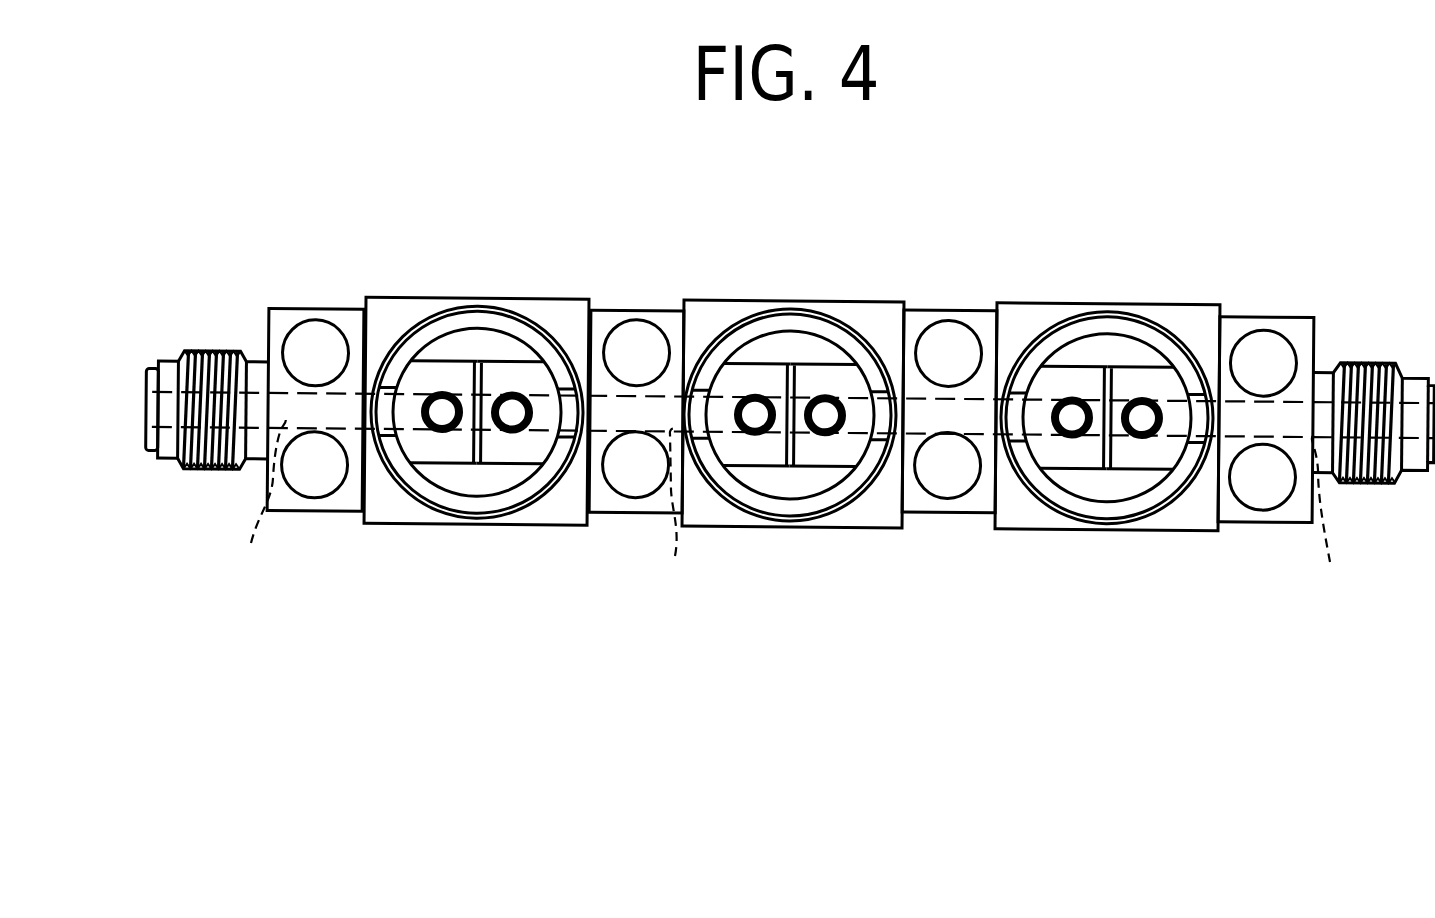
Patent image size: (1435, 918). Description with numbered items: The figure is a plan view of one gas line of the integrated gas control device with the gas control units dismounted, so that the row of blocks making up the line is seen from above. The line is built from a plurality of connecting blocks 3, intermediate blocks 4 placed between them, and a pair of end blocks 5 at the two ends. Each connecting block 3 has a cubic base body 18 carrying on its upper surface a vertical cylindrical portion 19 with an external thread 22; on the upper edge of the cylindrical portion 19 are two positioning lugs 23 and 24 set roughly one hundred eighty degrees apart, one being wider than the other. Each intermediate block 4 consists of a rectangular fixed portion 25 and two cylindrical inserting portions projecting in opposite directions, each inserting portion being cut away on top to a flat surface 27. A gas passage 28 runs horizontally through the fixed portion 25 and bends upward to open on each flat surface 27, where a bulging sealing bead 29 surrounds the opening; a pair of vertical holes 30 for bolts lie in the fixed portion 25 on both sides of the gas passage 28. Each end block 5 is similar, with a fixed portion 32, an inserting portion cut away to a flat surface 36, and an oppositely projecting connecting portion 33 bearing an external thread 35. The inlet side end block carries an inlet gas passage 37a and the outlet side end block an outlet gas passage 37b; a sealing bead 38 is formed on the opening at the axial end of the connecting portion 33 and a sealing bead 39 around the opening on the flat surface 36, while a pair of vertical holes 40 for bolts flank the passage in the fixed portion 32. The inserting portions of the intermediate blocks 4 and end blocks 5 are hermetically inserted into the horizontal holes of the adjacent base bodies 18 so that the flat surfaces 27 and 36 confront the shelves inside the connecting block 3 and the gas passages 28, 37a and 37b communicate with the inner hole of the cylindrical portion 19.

The connecting block 3 is at (575, 295).
The intermediate block 4 is at (665, 297).
The end block 5 is at (249, 303).
The base body 18 is at (740, 299).
The cylindrical portion 19 is at (830, 501).
The external thread 22 is at (745, 510).
The positioning lug 23 is at (877, 377).
The positioning lug 24 is at (703, 347).
The fixed portion 25 is at (622, 308).
The flat surface 27 is at (512, 456).
The gas passage 28 is at (678, 514).
The sealing bead 29 is at (512, 390).
The vertical hole 30 is at (629, 493).
The fixed portion 32 is at (338, 308).
The connecting portion 33 is at (166, 347).
The external thread 35 is at (212, 472).
The flat surface 36 is at (440, 370).
The inlet gas passage 37a is at (257, 502).
The outlet gas passage 37b is at (1348, 519).
The sealing bead 38 is at (147, 440).
The sealing bead 39 is at (430, 438).
The vertical hole 40 is at (305, 493).